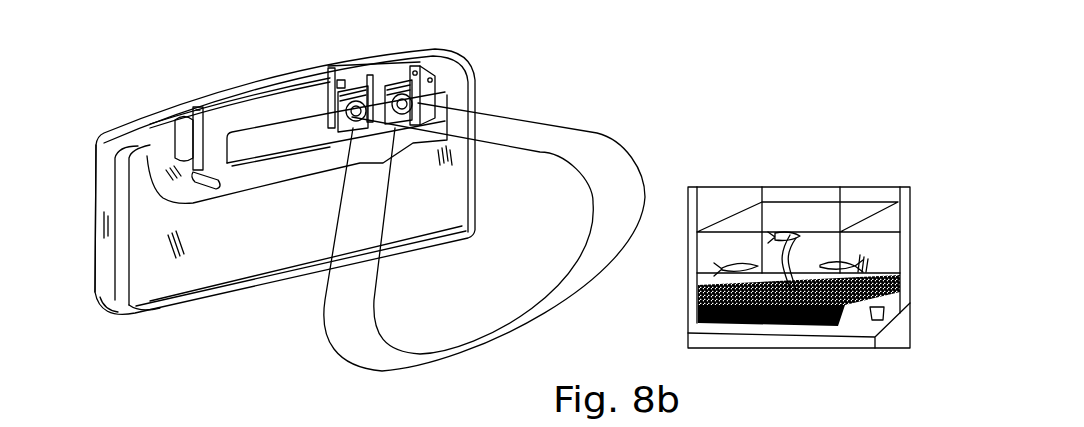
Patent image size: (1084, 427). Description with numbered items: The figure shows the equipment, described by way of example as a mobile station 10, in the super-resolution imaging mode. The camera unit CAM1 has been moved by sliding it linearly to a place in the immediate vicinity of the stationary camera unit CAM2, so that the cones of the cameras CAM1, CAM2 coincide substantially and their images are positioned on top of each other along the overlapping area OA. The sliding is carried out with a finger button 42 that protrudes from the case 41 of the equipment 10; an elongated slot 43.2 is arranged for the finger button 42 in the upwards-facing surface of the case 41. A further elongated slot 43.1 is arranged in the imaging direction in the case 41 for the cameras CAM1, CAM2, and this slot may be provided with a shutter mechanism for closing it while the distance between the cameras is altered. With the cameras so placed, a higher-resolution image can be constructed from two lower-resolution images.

The mobile station 10 is at (267, 290).
The case 41 is at (110, 263).
The finger button 42 is at (347, 47).
The elongated slot 43.1 is at (286, 158).
The elongated slot 43.2 is at (228, 106).
The camera unit CAM1 is at (312, 106).
The camera unit CAM2 is at (432, 100).
The overlapping area OA is at (560, 346).